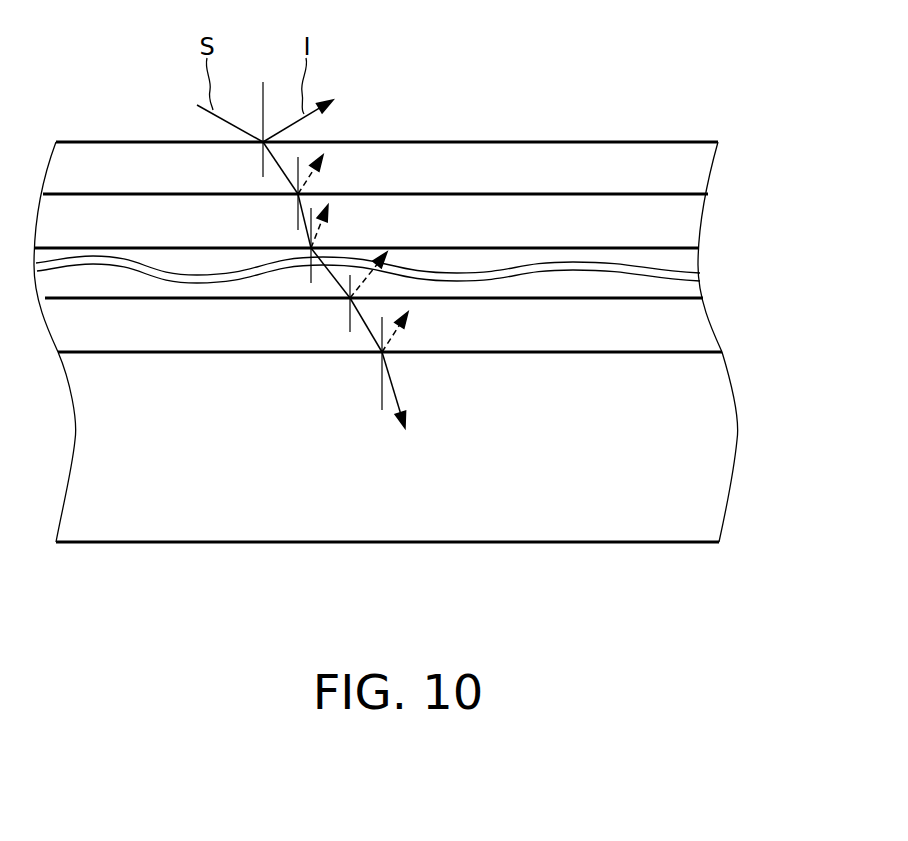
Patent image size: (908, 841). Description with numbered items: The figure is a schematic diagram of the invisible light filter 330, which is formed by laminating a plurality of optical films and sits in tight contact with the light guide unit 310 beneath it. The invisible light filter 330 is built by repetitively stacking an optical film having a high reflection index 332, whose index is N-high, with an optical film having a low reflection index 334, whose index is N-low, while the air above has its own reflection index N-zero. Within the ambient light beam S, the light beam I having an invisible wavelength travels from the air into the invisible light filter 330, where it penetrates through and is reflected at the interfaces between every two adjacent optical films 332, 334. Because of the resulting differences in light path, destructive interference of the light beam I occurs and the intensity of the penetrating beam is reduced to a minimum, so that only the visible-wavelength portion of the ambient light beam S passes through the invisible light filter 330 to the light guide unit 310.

The light guide unit 310 is at (708, 442).
The invisible light filter 330 is at (823, 148).
The optical film having a high reflection index 332 is at (688, 220).
The optical film having a low reflection index 334 is at (688, 173).